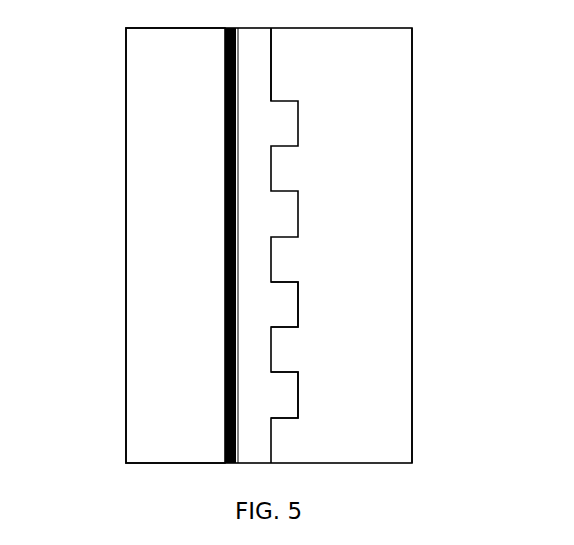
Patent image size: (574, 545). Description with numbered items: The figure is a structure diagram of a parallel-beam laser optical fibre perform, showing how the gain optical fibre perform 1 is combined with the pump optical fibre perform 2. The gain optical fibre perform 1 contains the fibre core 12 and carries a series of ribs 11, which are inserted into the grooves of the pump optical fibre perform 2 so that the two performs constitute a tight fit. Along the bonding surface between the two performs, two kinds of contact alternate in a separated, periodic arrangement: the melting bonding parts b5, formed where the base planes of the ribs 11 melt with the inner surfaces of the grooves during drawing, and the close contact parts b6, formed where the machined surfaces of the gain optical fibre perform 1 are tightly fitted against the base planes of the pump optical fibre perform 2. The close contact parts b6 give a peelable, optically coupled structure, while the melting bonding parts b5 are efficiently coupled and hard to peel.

The gain optical fibre perform 1 is at (141, 200).
The pump optical fibre perform 2 is at (390, 200).
The fibre core 12 is at (225, 343).
The rib 11 is at (287, 396).
The melting bonding part b5 is at (271, 86).
The close contact part b6 is at (298, 298).